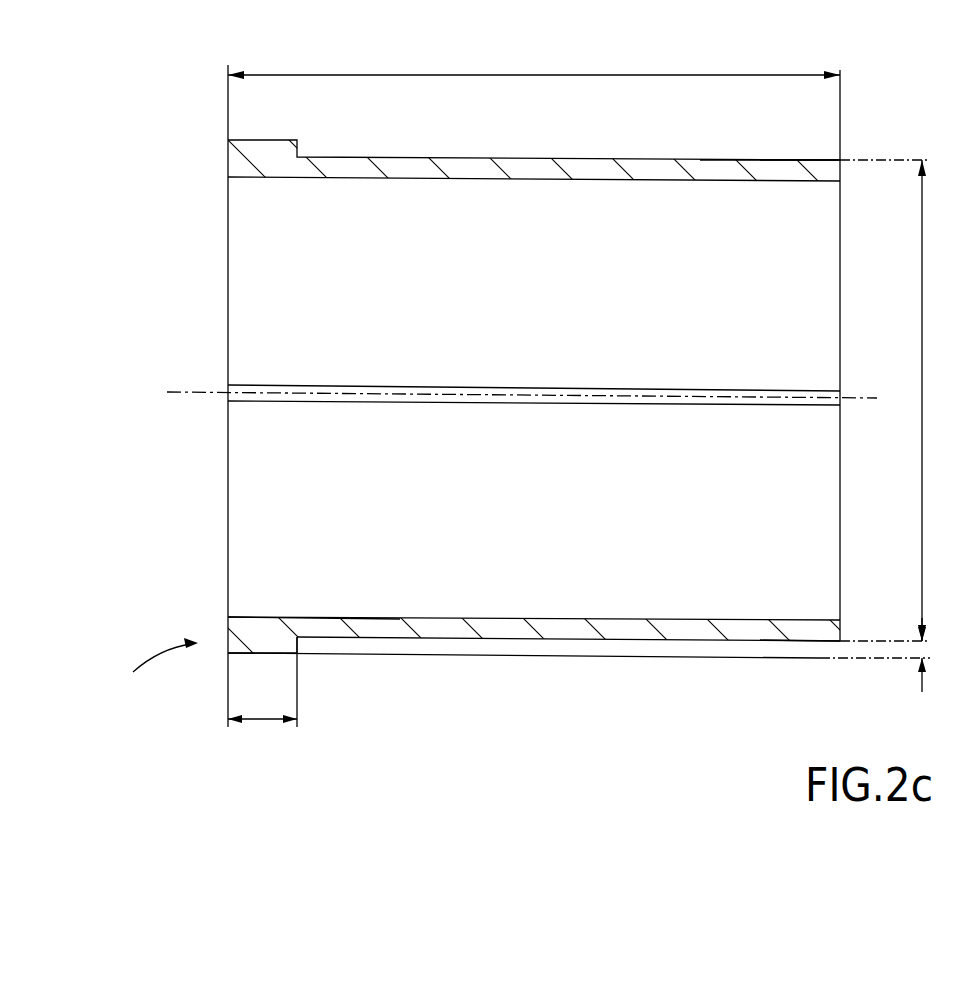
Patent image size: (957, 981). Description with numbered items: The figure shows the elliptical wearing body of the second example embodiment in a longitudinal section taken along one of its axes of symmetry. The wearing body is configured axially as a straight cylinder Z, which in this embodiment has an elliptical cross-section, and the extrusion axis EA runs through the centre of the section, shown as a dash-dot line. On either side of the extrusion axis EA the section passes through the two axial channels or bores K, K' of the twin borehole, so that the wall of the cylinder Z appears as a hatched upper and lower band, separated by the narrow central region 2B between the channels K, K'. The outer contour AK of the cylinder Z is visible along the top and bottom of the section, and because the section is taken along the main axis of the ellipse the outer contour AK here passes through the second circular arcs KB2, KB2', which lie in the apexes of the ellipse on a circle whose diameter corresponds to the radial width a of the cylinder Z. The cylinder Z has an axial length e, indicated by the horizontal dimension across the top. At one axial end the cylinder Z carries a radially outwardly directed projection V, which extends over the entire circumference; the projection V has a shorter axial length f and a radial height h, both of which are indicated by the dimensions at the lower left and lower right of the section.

The channel K is at (478, 396).
The channel K' is at (506, 602).
The central separating band 2B is at (243, 538).
The extrusion axis EA is at (176, 388).
The outer contour AK is at (800, 160).
The second circular arc KB2 is at (836, 146).
The second circular arc KB2' is at (825, 679).
The projection V is at (300, 645).
The cylinder Z is at (158, 673).
The axial length e is at (534, 64).
The radial width a is at (885, 400).
The radial height h is at (875, 655).
The axial length f is at (262, 690).